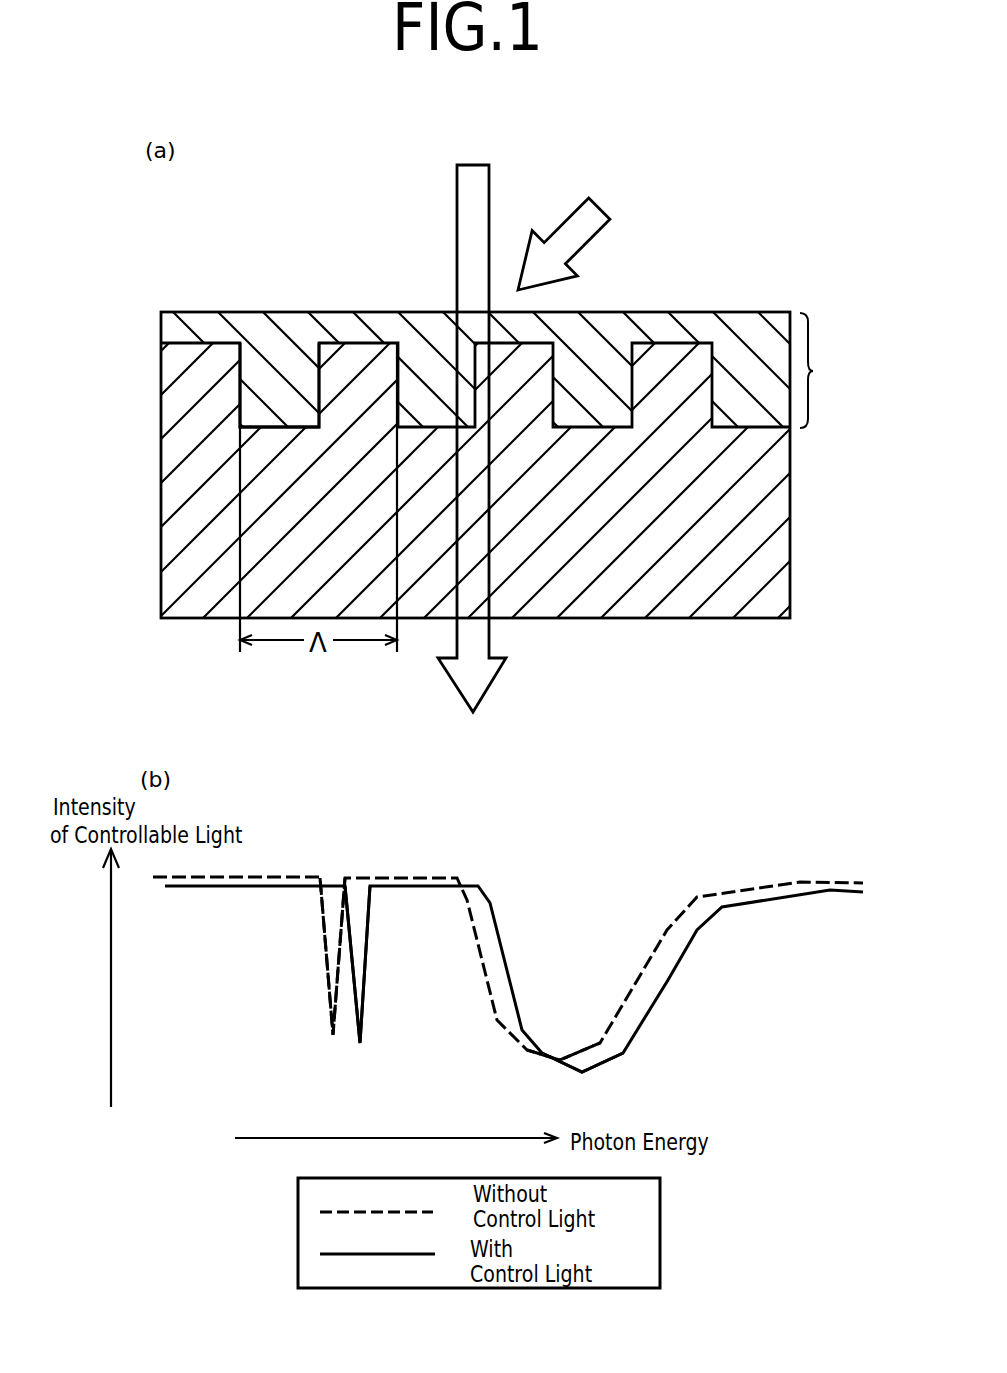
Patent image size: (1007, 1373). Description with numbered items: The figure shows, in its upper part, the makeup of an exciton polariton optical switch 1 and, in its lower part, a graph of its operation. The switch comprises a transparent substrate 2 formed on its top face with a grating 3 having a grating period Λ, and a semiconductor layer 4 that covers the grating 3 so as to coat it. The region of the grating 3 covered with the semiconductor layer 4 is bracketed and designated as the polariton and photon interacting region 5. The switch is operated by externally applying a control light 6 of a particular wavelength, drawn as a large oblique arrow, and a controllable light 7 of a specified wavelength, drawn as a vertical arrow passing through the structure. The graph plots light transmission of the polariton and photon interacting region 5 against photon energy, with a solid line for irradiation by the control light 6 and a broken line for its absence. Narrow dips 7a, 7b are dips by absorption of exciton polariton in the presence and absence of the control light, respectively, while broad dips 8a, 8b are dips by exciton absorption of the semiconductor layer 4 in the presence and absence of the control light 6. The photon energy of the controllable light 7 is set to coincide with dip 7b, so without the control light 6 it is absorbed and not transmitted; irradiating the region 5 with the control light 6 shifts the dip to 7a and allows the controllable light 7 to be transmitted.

The exciton polariton optical switch 1 is at (324, 204).
The transparent substrate 2 is at (160, 423).
The grating 3 is at (580, 348).
The semiconductor layer 4 is at (272, 385).
The polariton and photon interacting region 5 is at (815, 370).
The control light 6 is at (597, 218).
The controllable light 7 is at (485, 188).
The exciton polariton absorption dip in the presence of the control light 7a is at (365, 1047).
The exciton polariton absorption dip in the absence of the control light 7b is at (333, 1033).
The exciton absorption dip in the presence of the control light 8a is at (580, 1075).
The exciton absorption dip in the absence of the control light 8b is at (563, 1060).